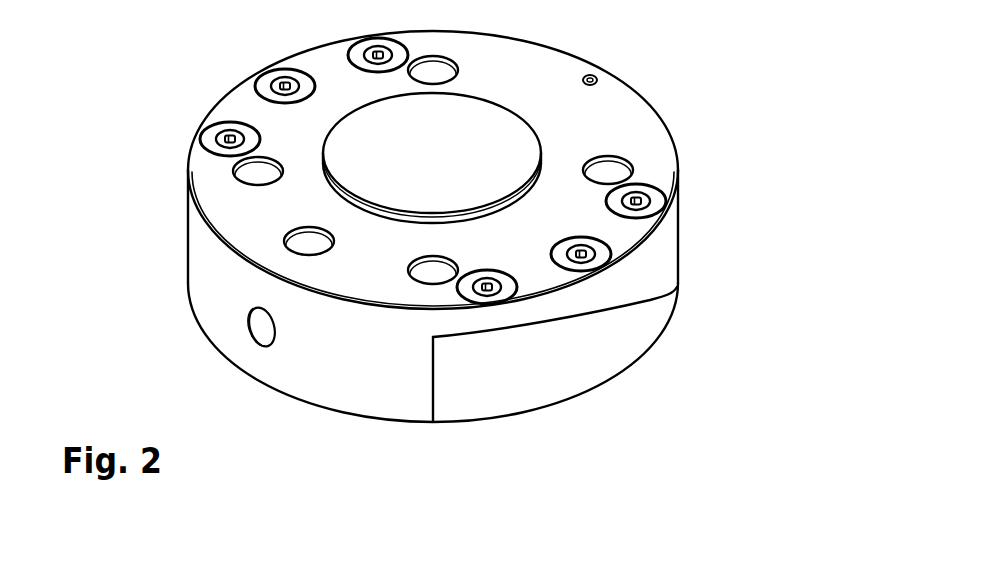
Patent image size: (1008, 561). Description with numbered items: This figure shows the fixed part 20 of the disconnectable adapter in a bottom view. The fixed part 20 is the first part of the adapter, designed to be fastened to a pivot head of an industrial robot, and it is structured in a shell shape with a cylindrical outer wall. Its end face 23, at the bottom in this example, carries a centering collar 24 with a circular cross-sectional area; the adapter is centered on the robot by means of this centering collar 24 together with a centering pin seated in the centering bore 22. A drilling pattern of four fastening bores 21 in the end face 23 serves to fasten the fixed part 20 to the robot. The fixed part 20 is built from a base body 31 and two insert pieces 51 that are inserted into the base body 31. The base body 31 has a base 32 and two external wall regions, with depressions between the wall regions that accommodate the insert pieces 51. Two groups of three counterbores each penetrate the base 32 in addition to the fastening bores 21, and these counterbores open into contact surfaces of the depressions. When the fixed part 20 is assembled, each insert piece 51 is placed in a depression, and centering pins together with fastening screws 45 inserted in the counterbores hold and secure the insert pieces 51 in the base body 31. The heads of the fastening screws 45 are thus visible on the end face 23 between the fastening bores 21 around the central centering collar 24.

The fixed part 20 is at (165, 292).
The fastening bores 21 is at (236, 172).
The centering bore 22 is at (597, 80).
The end face 23 is at (641, 138).
The centering collar 24 is at (527, 191).
The base body 31 is at (203, 262).
The base 32 is at (564, 210).
The fastening screws 45 is at (265, 80).
The insert pieces 51 is at (615, 322).